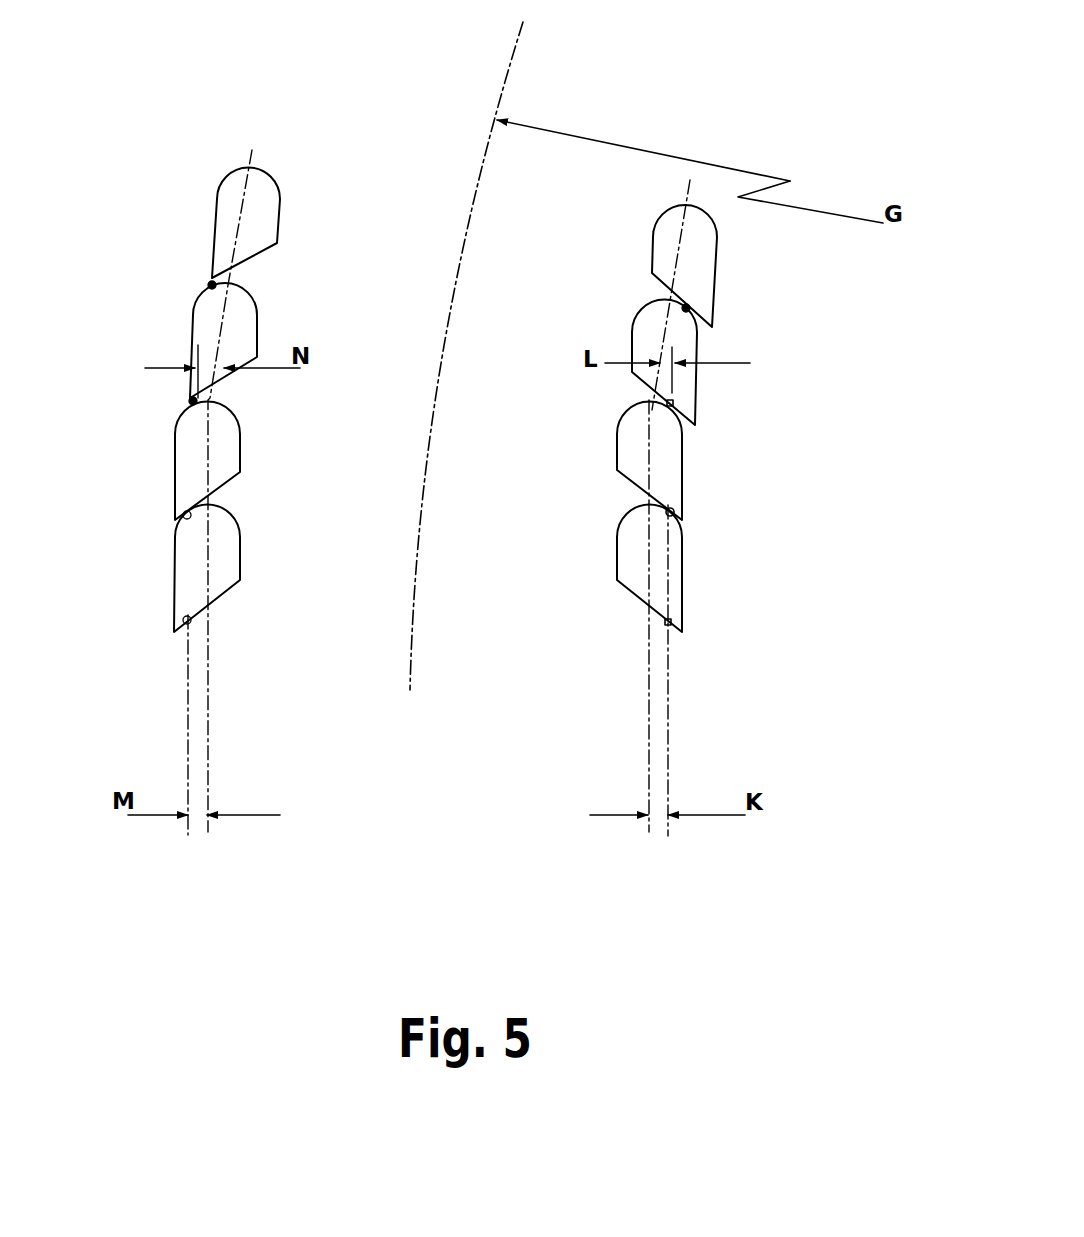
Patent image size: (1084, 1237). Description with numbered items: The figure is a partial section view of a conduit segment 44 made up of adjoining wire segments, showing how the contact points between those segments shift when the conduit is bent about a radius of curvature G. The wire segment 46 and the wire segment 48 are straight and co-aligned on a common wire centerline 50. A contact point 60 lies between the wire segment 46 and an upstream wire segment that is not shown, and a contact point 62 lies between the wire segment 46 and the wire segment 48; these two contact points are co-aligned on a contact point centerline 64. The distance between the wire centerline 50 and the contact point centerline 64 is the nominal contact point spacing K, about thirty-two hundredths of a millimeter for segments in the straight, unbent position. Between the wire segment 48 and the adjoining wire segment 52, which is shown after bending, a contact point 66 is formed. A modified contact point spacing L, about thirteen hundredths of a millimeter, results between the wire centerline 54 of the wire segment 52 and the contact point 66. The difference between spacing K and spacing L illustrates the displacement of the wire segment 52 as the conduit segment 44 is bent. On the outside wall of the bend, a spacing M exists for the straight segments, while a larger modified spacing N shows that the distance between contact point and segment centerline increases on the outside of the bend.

The conduit segment 44 is at (853, 375).
The wire segment 46 is at (682, 577).
The wire segment 48 is at (682, 485).
The wire segment 52 is at (697, 348).
The wire centerline 54 is at (660, 317).
The wire centerline 50 is at (643, 768).
The contact point centerline 64 is at (668, 780).
The contact point 60 is at (673, 620).
The contact point 62 is at (674, 510).
The contact point 66 is at (675, 403).